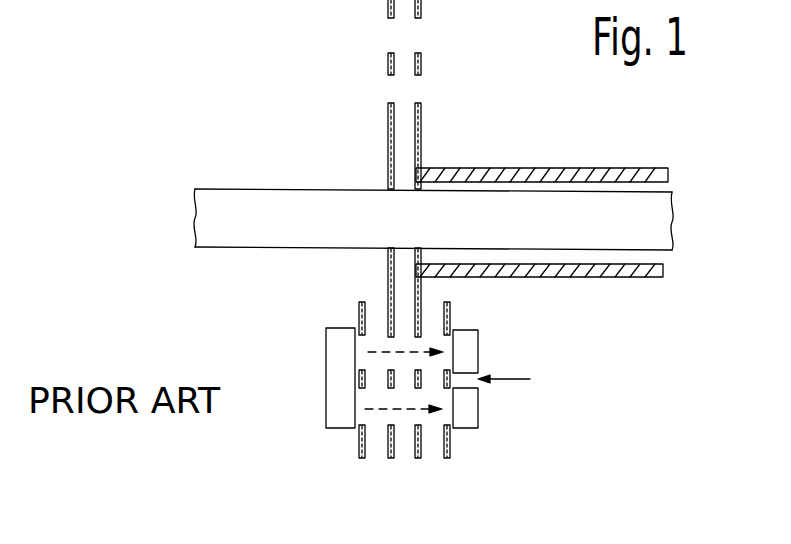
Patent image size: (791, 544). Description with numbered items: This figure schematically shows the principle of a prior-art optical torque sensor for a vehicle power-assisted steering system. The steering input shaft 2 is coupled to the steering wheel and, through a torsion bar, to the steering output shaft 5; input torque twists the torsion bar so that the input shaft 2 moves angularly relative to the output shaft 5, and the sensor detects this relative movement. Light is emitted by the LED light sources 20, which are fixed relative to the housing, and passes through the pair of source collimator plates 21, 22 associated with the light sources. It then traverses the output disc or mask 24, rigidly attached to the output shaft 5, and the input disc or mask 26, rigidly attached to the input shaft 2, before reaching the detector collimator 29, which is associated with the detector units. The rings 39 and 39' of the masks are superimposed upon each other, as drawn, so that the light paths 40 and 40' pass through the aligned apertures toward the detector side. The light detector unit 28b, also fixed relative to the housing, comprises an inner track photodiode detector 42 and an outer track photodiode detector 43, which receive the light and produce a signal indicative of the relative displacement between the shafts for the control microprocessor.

The steering input shaft 2 is at (596, 173).
The steering output shaft 5 is at (460, 212).
The LED light sources 20 is at (337, 387).
The source collimator plate 21 is at (347, 447).
The source collimator plate 22 is at (362, 450).
The output disc or mask 24 is at (389, 458).
The input disc or mask 26 is at (417, 455).
The light detector unit 28b is at (528, 378).
The detector collimator 29 is at (448, 452).
The ring 39 is at (459, 312).
The ring 39' is at (329, 313).
The light beam path 40 is at (456, 422).
The light beam path 40' is at (350, 412).
The inner track photodiode detector 42 is at (470, 353).
The outer track photodiode detector 43 is at (460, 417).